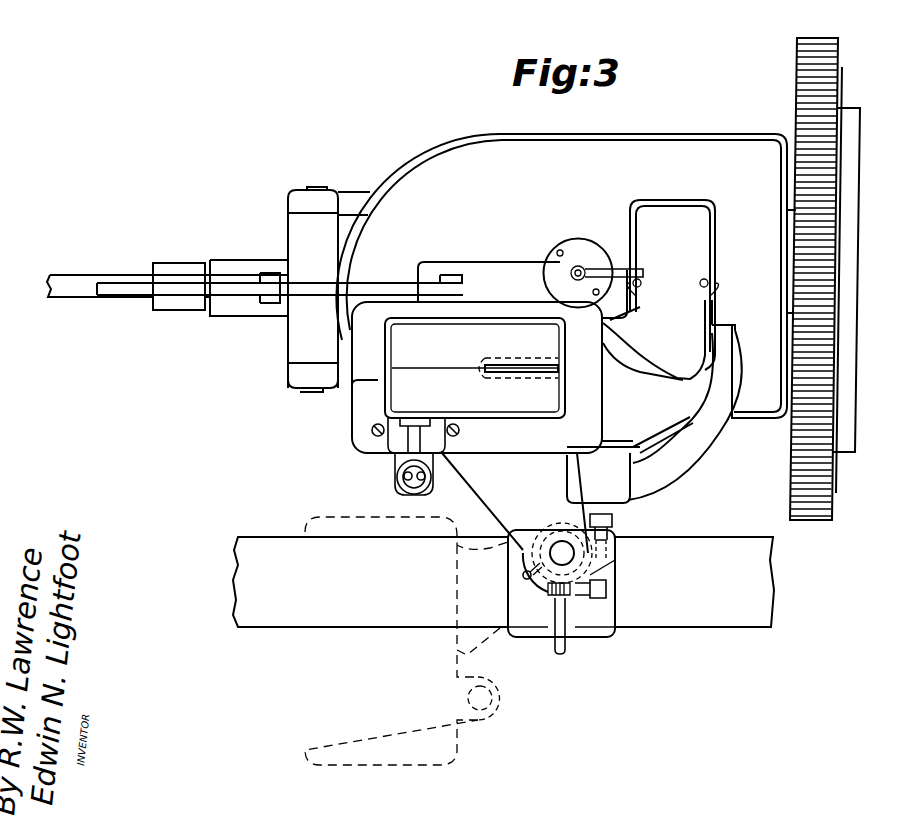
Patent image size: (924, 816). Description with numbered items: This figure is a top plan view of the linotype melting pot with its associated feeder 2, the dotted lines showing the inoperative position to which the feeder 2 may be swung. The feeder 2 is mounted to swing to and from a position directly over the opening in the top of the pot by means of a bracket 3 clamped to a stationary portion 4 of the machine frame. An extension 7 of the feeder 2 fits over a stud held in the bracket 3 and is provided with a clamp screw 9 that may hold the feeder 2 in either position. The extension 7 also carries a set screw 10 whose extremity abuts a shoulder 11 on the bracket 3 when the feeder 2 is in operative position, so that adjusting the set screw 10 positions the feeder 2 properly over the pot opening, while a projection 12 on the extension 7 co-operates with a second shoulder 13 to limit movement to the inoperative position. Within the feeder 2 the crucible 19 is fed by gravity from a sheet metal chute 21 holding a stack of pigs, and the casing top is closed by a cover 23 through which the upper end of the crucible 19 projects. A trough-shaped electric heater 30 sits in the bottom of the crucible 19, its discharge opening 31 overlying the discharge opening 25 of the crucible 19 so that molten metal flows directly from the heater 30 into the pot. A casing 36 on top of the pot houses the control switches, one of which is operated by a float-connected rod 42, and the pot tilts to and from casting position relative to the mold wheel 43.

The feeder 2 is at (358, 432).
The bracket 3 is at (600, 625).
The stationary portion of the frame 4 is at (703, 560).
The extension 7 is at (497, 507).
The clamp screw 9 is at (520, 575).
The set screw 10 is at (608, 596).
The shoulder 11 is at (558, 606).
The projection 12 is at (615, 556).
The second shoulder 13 is at (545, 522).
The crucible 19 is at (428, 322).
The chute 21 is at (455, 326).
The cover 23 is at (352, 388).
The discharge opening 25 is at (504, 378).
The electric heater 30 is at (473, 396).
The discharge opening 31 is at (514, 365).
The casing 36 is at (672, 228).
The rod 42 is at (612, 258).
The mold wheel 43 is at (838, 76).